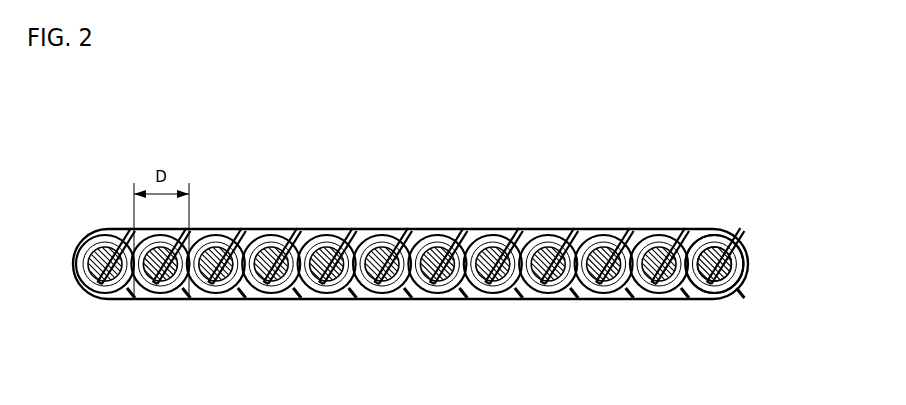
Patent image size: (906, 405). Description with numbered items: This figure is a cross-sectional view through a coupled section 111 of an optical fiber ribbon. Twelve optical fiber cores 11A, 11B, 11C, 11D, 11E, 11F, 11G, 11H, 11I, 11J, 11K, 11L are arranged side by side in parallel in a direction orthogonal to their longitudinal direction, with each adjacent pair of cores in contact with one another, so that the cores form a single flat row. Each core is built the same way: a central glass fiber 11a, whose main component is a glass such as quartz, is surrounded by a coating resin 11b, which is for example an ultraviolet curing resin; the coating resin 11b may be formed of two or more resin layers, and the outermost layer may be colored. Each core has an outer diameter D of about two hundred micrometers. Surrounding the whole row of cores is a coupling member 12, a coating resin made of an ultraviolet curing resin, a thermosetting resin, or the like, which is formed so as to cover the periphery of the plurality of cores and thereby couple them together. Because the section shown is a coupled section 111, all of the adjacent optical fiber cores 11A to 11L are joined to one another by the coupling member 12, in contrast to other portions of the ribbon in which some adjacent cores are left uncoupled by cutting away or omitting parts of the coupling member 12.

The coupled section 111 is at (606, 191).
The coupling member 12 is at (692, 236).
The optical fiber core 11A is at (92, 293).
The optical fiber core 11B is at (150, 293).
The optical fiber core 11C is at (203, 293).
The optical fiber core 11D is at (261, 293).
The optical fiber core 11E is at (314, 293).
The optical fiber core 11F is at (372, 293).
The optical fiber core 11G is at (425, 293).
The optical fiber core 11H is at (483, 293).
The optical fiber core 11I is at (536, 293).
The optical fiber core 11J is at (593, 293).
The optical fiber core 11K is at (647, 293).
The optical fiber core 11L is at (704, 293).
The glass fiber 11a is at (720, 274).
The coating resin 11b is at (728, 248).